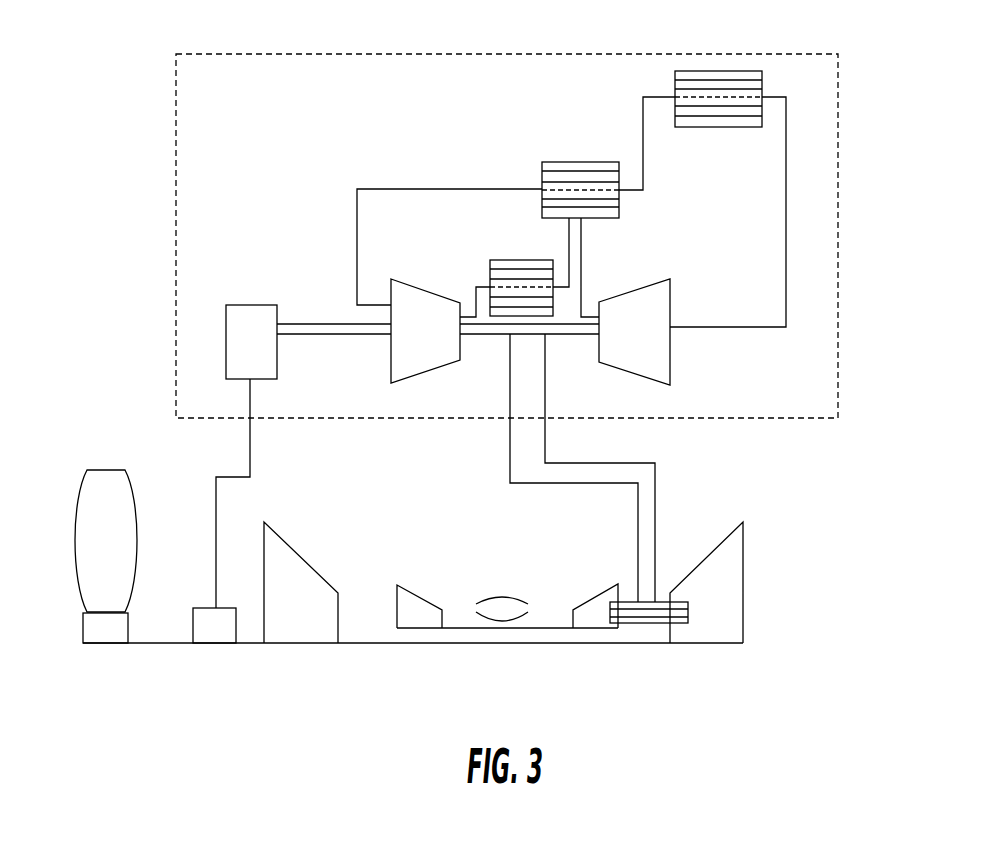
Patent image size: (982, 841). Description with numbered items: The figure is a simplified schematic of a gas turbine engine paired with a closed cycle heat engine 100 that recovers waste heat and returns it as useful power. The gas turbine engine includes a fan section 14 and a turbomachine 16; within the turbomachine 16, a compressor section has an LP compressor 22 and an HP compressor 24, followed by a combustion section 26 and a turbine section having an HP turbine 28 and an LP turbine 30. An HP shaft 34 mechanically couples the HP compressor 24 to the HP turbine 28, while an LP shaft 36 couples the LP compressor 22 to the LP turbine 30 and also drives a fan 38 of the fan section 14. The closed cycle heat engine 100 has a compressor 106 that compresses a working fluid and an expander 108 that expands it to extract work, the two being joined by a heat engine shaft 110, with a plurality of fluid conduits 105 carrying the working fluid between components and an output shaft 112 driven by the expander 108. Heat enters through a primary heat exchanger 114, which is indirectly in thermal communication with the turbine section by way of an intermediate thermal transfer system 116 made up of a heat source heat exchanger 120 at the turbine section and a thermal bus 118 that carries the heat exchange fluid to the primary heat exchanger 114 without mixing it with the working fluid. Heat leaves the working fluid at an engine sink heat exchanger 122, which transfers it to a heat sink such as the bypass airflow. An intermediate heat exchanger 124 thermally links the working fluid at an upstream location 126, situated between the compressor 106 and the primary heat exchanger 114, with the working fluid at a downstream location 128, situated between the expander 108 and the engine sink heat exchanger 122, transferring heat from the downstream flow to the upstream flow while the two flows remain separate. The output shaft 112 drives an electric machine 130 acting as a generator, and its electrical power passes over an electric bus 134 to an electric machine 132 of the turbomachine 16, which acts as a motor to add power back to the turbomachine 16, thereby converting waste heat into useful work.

The fan section 14 is at (77, 447).
The turbomachine 16 is at (400, 502).
The LP compressor 22 is at (317, 613).
The HP compressor 24 is at (415, 610).
The combustion section 26 is at (505, 592).
The HP turbine 28 is at (593, 620).
The LP turbine 30 is at (727, 585).
The HP shaft 34 is at (463, 630).
The LP shaft 36 is at (517, 645).
The fan 38 is at (72, 528).
The closed cycle heat engine 100 is at (810, 76).
The fluid conduits 105 is at (395, 187).
The compressor 106 is at (650, 351).
The expander 108 is at (440, 351).
The heat engine shaft 110 is at (563, 337).
The output shaft 112 is at (315, 335).
The primary heat exchanger 114 is at (520, 260).
The intermediate thermal transfer system 116 is at (684, 492).
The thermal bus 118 is at (525, 484).
The heat source heat exchanger 120 is at (648, 625).
The engine sink heat exchanger 122 is at (735, 71).
The intermediate heat exchanger 124 is at (580, 162).
The upstream location 126 is at (595, 224).
The downstream location 128 is at (535, 183).
The electric machine 130 is at (269, 359).
The electric machine 132 is at (210, 620).
The electric bus 134 is at (214, 502).